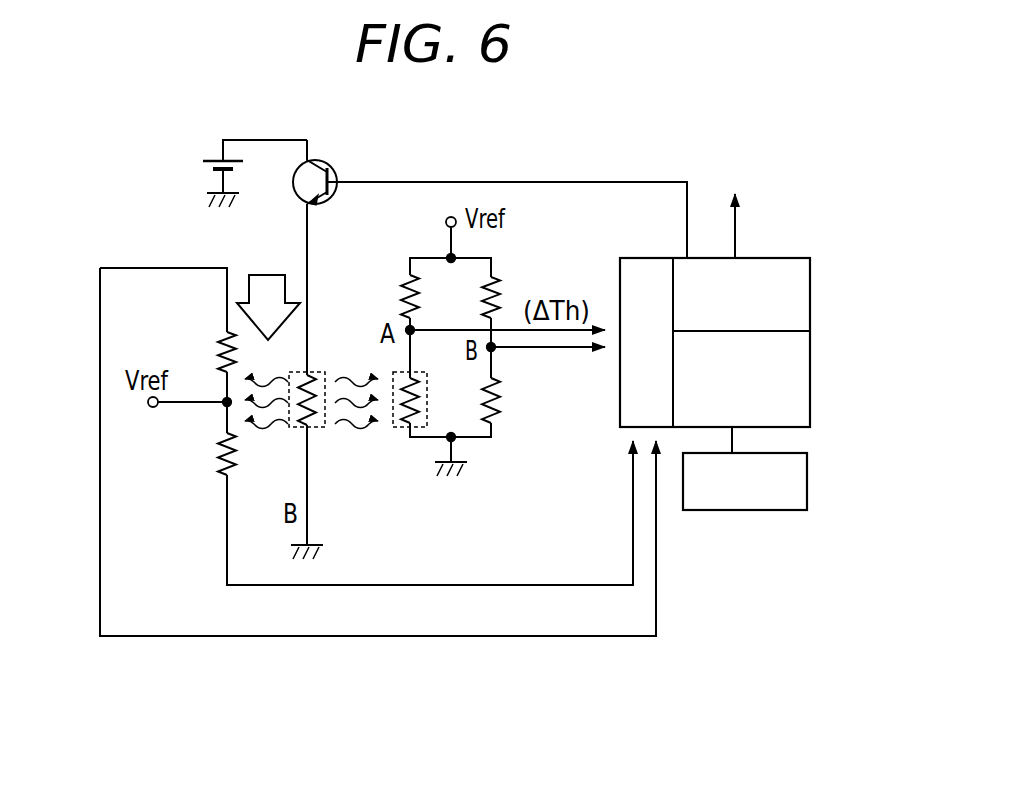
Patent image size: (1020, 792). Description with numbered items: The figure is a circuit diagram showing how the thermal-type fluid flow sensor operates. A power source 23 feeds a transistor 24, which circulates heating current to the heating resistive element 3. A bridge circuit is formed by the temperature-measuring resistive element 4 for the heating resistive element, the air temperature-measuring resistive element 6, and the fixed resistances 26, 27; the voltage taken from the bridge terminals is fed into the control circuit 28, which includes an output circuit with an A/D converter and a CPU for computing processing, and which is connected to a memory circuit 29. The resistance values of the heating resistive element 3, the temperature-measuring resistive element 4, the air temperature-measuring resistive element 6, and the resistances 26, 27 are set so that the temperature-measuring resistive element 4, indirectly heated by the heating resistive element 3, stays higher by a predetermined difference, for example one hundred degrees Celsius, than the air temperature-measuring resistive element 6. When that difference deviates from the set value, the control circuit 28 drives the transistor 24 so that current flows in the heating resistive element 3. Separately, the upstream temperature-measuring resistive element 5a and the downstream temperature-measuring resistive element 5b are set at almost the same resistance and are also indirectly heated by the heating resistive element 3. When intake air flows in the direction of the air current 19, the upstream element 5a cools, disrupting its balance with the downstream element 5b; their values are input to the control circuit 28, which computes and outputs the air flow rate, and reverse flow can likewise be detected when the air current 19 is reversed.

The heating resistive element 3 is at (316, 372).
The temperature-measuring resistive element for the heating resistive element 4 is at (403, 420).
The upstream temperature-measuring resistive element 5a is at (214, 352).
The downstream temperature-measuring resistive element 5b is at (214, 465).
The air temperature-measuring resistive element 6 is at (503, 405).
The air current 19 is at (268, 286).
The power source 23 is at (212, 158).
The transistor 24 is at (327, 162).
The resistance 26 is at (402, 280).
The resistance 27 is at (502, 283).
The control circuit 28 is at (778, 257).
The memory circuit 29 is at (763, 512).